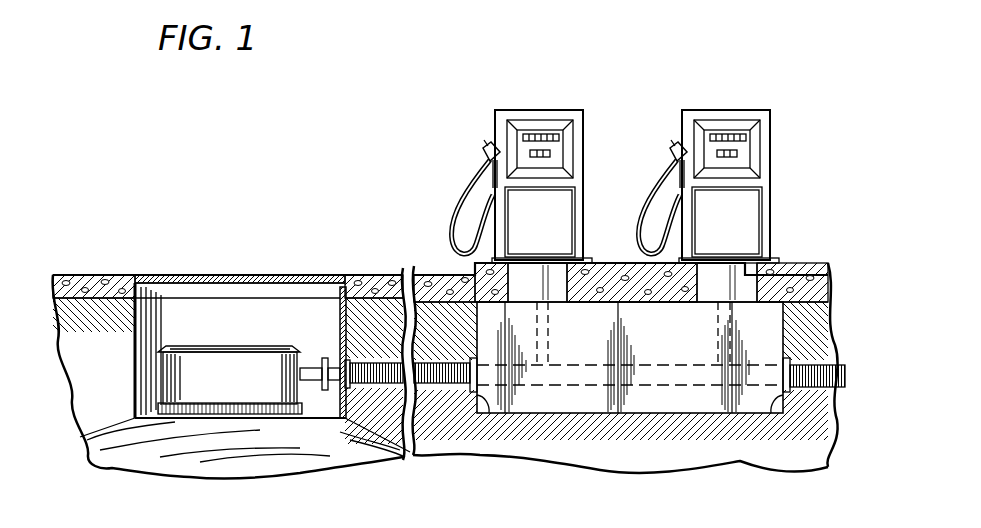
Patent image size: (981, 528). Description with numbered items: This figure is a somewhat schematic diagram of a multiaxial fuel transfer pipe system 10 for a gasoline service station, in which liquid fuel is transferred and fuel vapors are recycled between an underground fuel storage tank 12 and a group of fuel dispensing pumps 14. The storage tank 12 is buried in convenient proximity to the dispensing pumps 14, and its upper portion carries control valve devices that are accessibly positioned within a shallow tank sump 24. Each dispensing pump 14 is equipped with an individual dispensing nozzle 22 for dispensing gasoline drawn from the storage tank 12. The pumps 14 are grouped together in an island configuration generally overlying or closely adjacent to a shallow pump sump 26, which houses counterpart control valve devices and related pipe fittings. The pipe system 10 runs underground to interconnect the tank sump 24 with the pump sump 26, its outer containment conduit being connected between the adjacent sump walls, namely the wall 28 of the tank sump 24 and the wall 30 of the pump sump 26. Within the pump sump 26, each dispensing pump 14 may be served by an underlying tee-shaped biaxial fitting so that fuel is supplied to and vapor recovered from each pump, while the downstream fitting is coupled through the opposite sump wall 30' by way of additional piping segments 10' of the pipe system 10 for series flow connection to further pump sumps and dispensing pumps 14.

The multiaxial fuel transfer pipe system 10 is at (615, 389).
The additional piping segments 10' is at (849, 365).
The underground fuel storage tank 12 is at (280, 458).
The fuel dispensing pumps 14 is at (565, 110).
The dispensing nozzles 22 is at (486, 147).
The tank sump 24 is at (205, 330).
The pump sump 26 is at (767, 324).
The wall of tank sump 28 is at (340, 313).
The wall of pump sump 30 is at (503, 435).
The opposite sump wall 30' is at (757, 416).